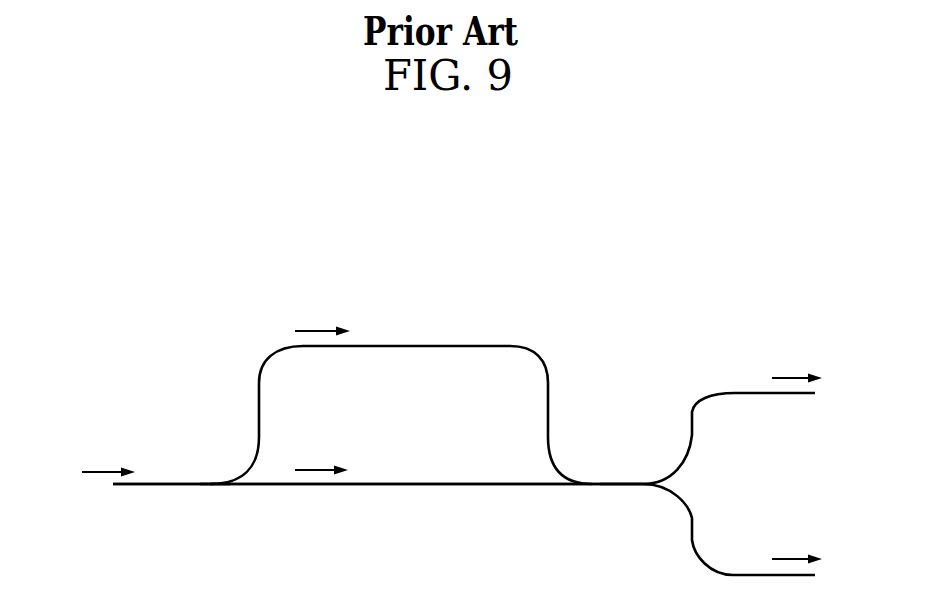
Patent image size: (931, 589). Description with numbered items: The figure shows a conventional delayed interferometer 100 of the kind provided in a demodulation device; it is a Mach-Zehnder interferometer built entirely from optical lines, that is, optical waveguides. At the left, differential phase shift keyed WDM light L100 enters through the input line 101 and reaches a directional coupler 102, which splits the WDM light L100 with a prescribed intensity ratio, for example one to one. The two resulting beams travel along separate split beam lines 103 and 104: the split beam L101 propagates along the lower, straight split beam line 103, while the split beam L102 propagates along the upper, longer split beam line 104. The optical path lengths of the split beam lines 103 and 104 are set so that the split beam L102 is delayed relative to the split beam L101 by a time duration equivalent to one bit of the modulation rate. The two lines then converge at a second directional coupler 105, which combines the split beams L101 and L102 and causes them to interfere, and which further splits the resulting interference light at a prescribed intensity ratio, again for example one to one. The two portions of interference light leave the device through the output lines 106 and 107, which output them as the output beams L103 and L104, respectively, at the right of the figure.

The delayed interferometer 100 is at (602, 244).
The input line 101 is at (167, 483).
The directional coupler 102 is at (211, 470).
The split beam line 103 is at (393, 483).
The split beam line 104 is at (404, 344).
The directional coupler 105 is at (617, 466).
The output line 106 is at (742, 390).
The output line 107 is at (742, 573).
The WDM light L100 is at (102, 468).
The split beam L101 is at (313, 467).
The split beam L102 is at (314, 328).
The output beam L103 is at (794, 374).
The output beam L104 is at (794, 555).